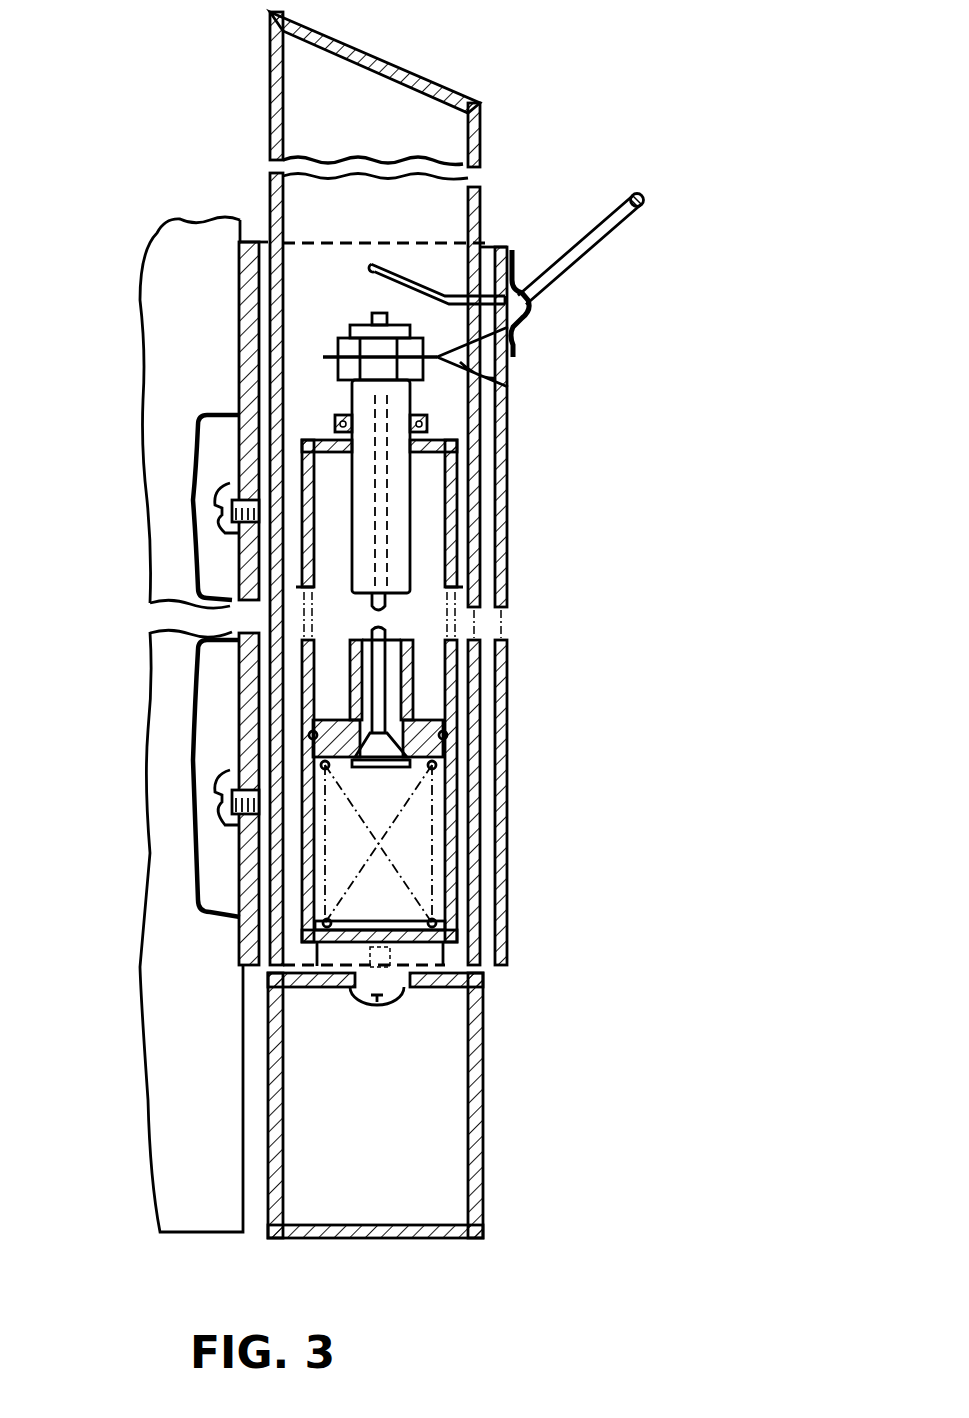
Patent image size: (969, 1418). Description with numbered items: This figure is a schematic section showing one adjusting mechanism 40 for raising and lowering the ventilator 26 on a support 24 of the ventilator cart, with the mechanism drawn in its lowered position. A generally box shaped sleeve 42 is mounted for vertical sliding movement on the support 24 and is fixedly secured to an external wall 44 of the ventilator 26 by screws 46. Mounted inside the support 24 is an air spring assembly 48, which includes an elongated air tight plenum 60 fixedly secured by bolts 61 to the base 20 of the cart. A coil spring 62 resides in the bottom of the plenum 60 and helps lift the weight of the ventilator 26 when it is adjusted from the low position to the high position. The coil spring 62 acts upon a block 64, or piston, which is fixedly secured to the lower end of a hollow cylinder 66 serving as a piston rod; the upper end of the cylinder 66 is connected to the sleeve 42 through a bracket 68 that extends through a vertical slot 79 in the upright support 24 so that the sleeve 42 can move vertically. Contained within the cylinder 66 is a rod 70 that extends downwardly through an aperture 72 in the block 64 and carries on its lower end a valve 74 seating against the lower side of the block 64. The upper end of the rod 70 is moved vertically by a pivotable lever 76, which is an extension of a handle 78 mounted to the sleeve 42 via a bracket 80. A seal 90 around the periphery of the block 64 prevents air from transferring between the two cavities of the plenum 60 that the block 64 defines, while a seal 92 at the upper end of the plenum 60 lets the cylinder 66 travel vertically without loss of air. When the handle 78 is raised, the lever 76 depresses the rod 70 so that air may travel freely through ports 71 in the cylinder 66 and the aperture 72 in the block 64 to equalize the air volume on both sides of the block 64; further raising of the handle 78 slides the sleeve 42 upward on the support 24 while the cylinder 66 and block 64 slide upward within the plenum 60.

The base 20 is at (483, 1113).
The support 24 is at (272, 192).
The ventilator 26 is at (160, 378).
The adjusting mechanism 40 is at (648, 491).
The sleeve 42 is at (232, 748).
The external wall 44 is at (233, 650).
The screws 46 is at (217, 502).
The air spring assembly 48 is at (430, 569).
The plenum 60 is at (433, 500).
The bolts 61 is at (378, 1003).
The coil spring 62 is at (455, 870).
The block 64 is at (420, 700).
The cylinder 66 is at (407, 537).
The bracket 68 is at (500, 377).
The rod 70 is at (376, 314).
The ports 71 is at (413, 698).
The aperture 72 is at (445, 757).
The valve 74 is at (372, 772).
The lever 76 is at (397, 268).
The handle 78 is at (612, 228).
The vertical slot 79 is at (480, 147).
The bracket 80 is at (527, 330).
The seal 90 is at (450, 735).
The seal 92 is at (427, 427).